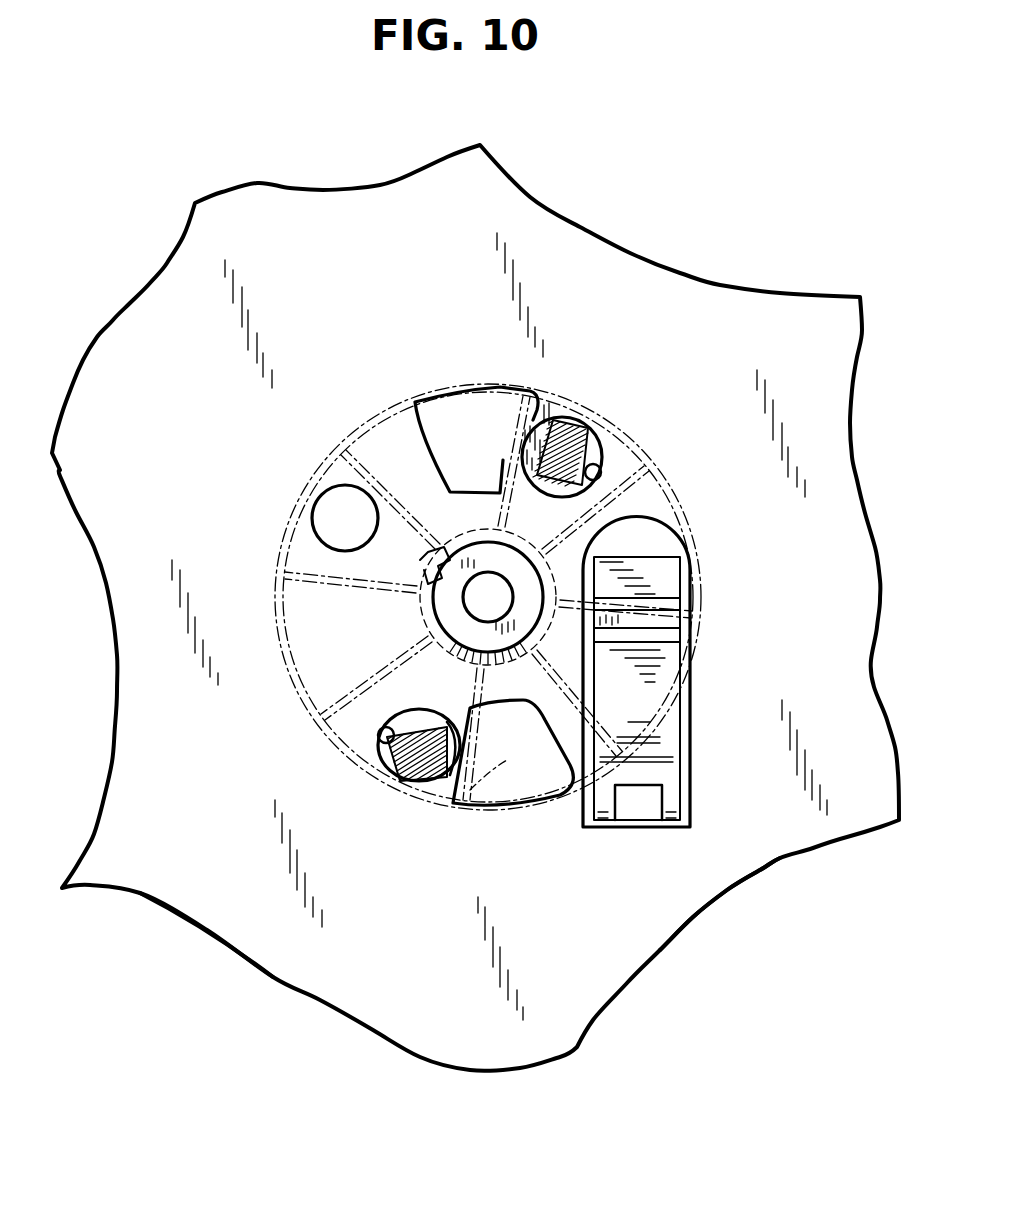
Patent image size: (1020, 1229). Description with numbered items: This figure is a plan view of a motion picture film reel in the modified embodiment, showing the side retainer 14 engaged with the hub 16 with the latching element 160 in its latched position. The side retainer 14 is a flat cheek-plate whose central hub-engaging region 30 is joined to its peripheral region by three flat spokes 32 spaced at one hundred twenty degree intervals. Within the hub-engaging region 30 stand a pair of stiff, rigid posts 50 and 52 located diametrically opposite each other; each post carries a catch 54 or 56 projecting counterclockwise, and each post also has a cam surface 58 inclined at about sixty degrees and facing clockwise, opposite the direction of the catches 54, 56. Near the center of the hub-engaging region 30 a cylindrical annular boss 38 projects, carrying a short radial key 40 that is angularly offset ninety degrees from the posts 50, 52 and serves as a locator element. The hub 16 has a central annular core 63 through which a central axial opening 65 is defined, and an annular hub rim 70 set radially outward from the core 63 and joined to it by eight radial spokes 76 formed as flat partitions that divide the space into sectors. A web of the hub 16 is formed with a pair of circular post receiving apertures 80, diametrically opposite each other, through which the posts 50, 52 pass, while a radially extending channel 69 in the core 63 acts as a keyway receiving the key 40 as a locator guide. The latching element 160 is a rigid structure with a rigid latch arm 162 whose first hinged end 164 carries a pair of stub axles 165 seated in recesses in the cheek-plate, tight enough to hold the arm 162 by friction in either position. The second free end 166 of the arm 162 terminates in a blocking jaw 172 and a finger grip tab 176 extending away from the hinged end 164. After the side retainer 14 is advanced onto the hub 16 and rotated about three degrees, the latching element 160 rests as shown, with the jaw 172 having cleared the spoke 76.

The side retainer 14 is at (688, 921).
The hub 16 is at (318, 462).
The hub-engaging region 30 is at (318, 965).
The spokes 32 is at (703, 867).
The annular boss 38 is at (440, 607).
The key 40 is at (428, 560).
The post 50 is at (410, 790).
The post 52 is at (583, 413).
The catch 54 is at (430, 785).
The catch 56 is at (537, 437).
The cam surface 58 is at (583, 445).
The annular core 63 is at (430, 640).
The central axial opening 65 is at (445, 632).
The channel 69 is at (455, 500).
The hub rim 70 is at (295, 706).
The radial spokes 76 is at (517, 680).
The post receiving apertures 80 is at (600, 468).
The latching element 160 is at (690, 739).
The latch arm 162 is at (640, 700).
The first hinged end 164 is at (607, 815).
The stub axles 165 is at (693, 788).
The second free end 166 is at (633, 565).
The jaw 172 is at (648, 607).
The finger grip tab 176 is at (657, 572).